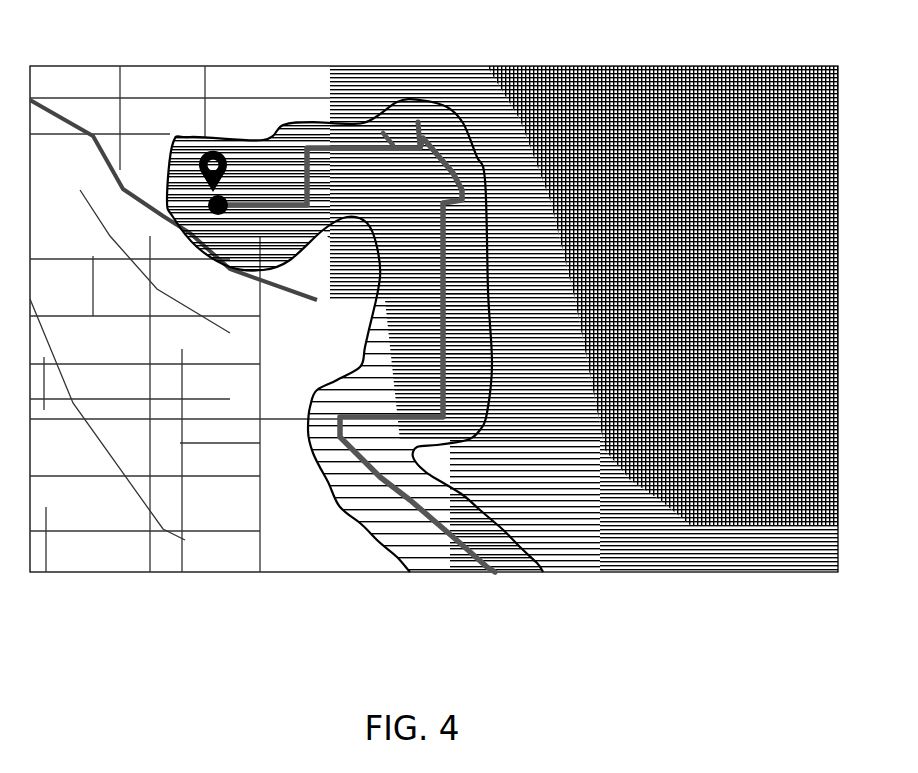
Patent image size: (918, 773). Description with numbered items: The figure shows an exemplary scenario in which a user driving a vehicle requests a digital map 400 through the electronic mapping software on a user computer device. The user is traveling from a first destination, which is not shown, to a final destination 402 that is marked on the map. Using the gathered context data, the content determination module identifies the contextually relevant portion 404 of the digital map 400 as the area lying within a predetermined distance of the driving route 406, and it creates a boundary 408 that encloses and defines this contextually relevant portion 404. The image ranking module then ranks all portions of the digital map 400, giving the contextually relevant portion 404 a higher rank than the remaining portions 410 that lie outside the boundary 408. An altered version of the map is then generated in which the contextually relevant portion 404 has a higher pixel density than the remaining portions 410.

The digital map 400 is at (648, 615).
The final destination 402 is at (217, 157).
The contextually relevant portion 404 is at (392, 195).
The driving route 406 is at (447, 168).
The boundary 408 is at (490, 207).
The remaining portions 410 is at (434, 361).